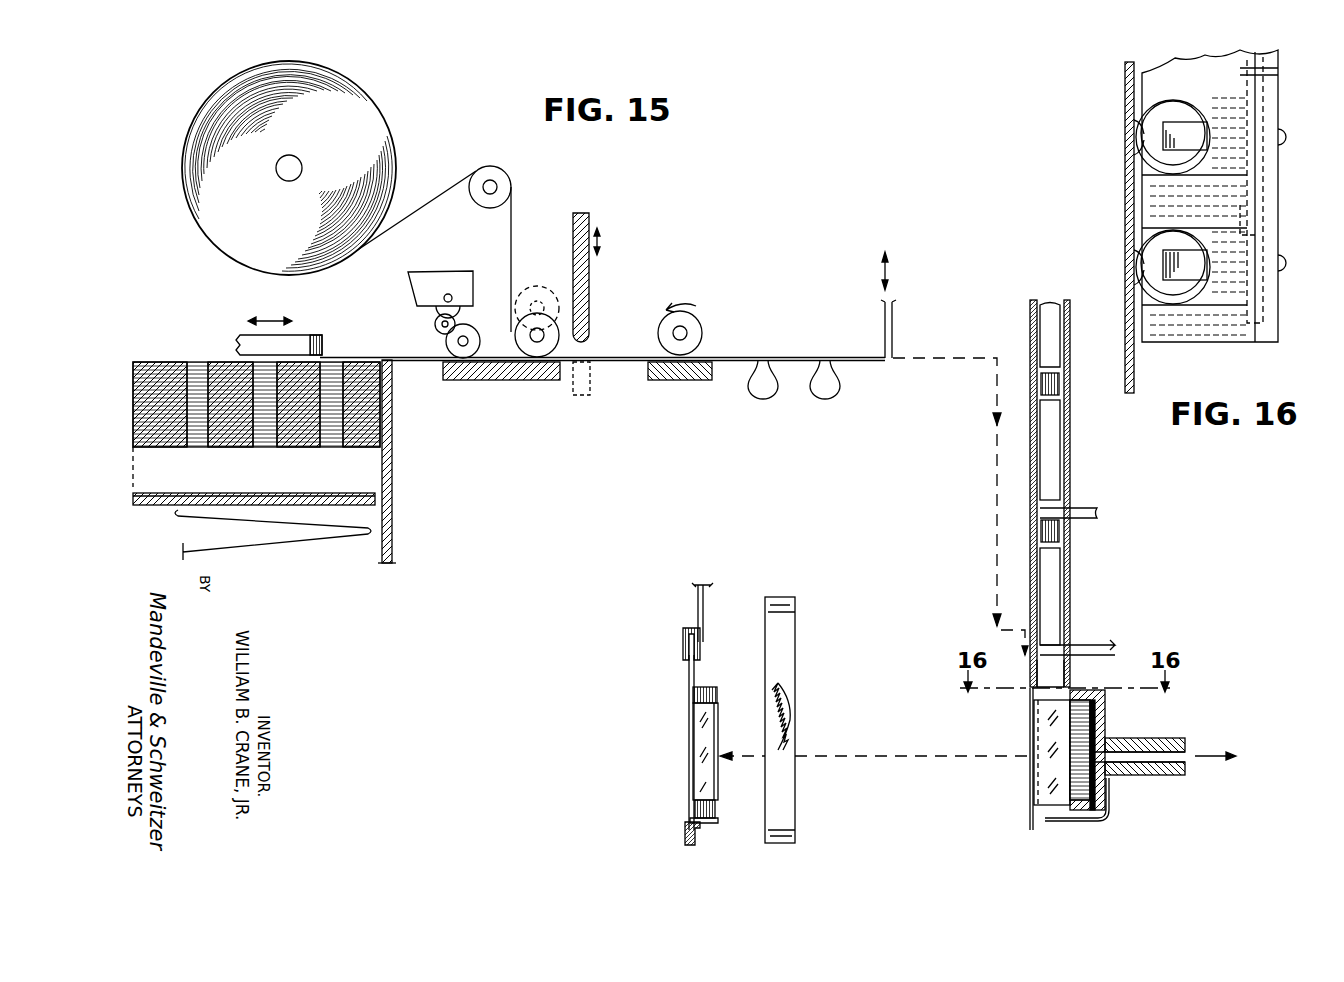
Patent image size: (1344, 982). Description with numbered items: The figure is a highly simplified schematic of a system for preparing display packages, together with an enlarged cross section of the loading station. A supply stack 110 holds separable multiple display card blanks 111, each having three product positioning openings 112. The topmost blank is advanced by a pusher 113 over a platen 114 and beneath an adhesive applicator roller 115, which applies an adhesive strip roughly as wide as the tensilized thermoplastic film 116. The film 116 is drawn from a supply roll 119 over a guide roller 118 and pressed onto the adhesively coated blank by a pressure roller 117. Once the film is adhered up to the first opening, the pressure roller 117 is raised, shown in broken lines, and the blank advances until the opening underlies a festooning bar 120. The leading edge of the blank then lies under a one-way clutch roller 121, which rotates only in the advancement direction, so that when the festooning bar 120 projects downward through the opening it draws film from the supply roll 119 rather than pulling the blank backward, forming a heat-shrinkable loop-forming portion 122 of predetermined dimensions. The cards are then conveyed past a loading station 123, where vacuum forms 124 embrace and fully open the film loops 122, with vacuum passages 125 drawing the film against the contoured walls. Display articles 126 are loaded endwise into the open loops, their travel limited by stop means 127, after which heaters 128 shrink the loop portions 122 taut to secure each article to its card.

In FIG. 15, the supply stack 110 is at (290, 505).
In FIG. 15, the display card blank 111 is at (404, 357).
In FIG. 16, the display card blank 111 is at (1134, 378).
In FIG. 15, the product positioning openings 112 is at (371, 358).
In FIG. 15, the pusher 113 is at (240, 341).
In FIG. 15, the platen 114 is at (468, 380).
In FIG. 15, the adhesive applicator roller 115 is at (472, 333).
In FIG. 15, the tensilized thermoplastic film 116 is at (511, 248).
In FIG. 15, the pressure roller 117 is at (543, 350).
In FIG. 15, the guide roller 118 is at (502, 179).
In FIG. 15, the supply roll 119 is at (383, 143).
In FIG. 15, the festooning bar 120 is at (586, 282).
In FIG. 15, the one-way clutch roller 121 is at (695, 330).
In FIG. 15, the loop-forming portion 122 is at (843, 382).
In FIG. 16, the loop-forming portion 122 is at (1140, 137).
In FIG. 15, the loading station 123 is at (1121, 561).
In FIG. 15, the vacuum forms 124 is at (1100, 718).
In FIG. 16, the vacuum forms 124 is at (1238, 330).
In FIG. 15, the vacuum passages 125 is at (1097, 778).
In FIG. 16, the vacuum passages 125 is at (1245, 235).
In FIG. 15, the display article 126 is at (1052, 617).
In FIG. 15, the stop means 127 is at (1078, 821).
In FIG. 16, the stop means 127 is at (1180, 125).
In FIG. 15, the heaters 128 is at (782, 658).